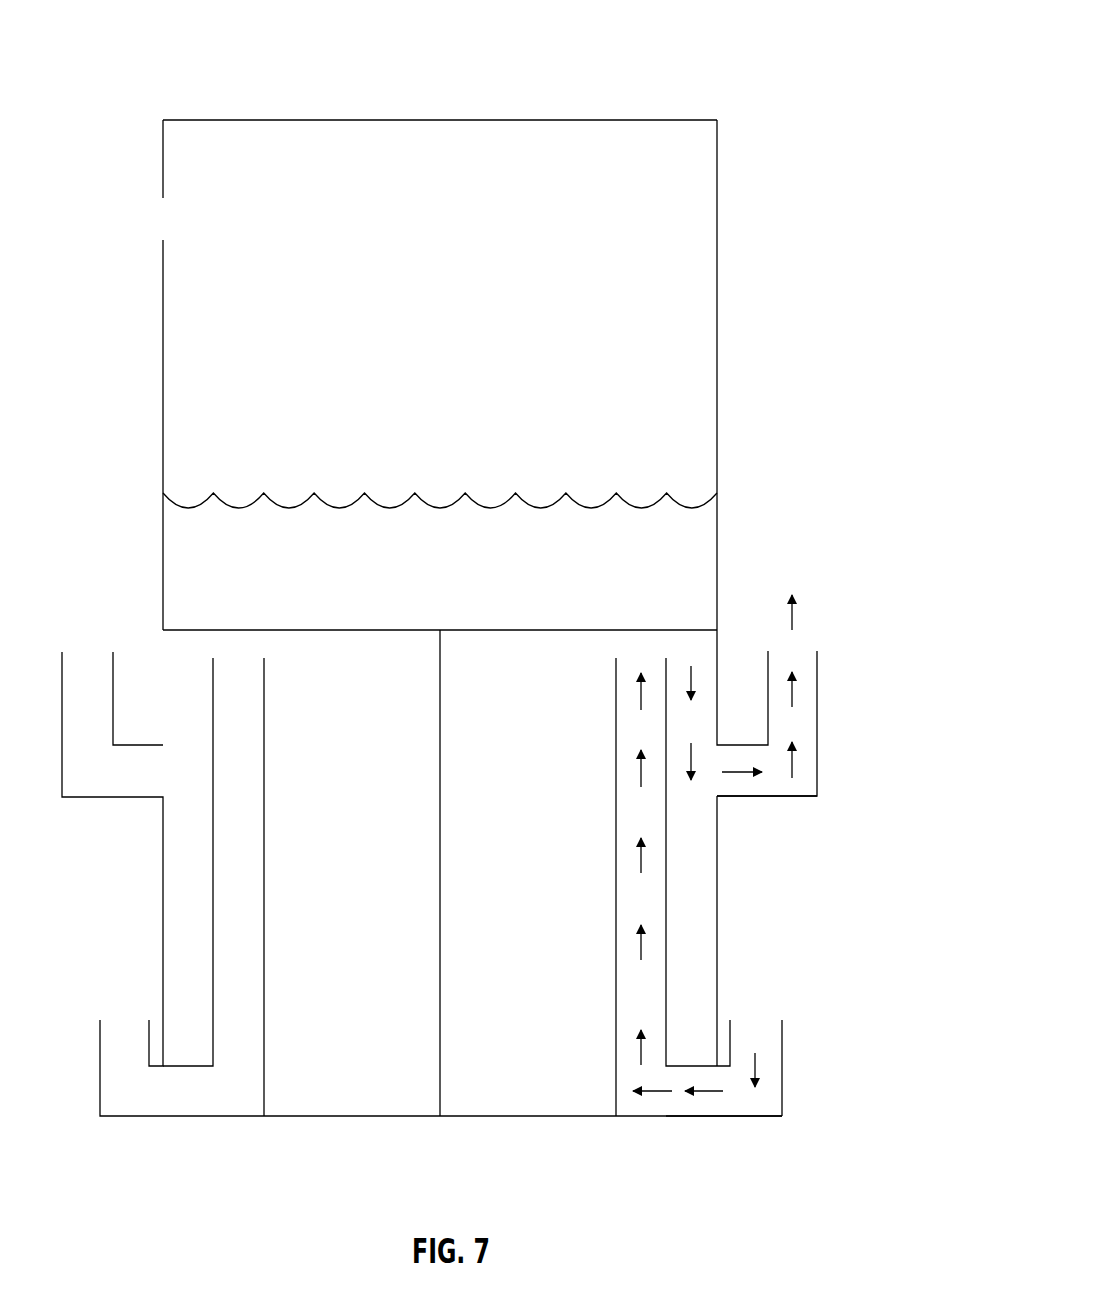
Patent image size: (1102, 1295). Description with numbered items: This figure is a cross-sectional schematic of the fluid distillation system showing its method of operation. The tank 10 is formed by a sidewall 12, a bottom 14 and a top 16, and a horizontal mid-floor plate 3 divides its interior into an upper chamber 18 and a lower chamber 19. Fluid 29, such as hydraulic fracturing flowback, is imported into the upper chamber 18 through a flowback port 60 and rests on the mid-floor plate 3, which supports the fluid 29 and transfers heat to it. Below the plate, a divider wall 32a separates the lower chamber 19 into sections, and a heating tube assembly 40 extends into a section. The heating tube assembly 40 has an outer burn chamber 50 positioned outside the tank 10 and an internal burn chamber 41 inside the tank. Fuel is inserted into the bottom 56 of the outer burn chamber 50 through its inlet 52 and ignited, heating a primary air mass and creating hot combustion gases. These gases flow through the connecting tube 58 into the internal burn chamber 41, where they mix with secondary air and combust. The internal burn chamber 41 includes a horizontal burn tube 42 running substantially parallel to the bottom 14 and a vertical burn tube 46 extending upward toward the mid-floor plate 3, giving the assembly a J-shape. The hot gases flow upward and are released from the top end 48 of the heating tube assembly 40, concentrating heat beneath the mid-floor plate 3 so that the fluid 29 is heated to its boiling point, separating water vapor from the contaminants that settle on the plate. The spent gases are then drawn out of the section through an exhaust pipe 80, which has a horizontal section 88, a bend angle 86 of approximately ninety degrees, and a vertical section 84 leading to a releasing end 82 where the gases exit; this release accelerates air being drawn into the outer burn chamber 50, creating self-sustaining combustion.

The tank 10 is at (705, 35).
The sidewall 12 is at (720, 405).
The top 16 is at (450, 119).
The upper chamber 18 is at (700, 248).
The flowback port 60 is at (165, 223).
The fluid 29 is at (210, 500).
The mid-floor plate 3 is at (560, 630).
The lower chamber 19 is at (182, 918).
The bottom 14 is at (300, 1118).
The divider wall 32a is at (438, 1088).
The heating tube assembly 40 is at (553, 921).
The top end 48 is at (613, 665).
The vertical burn tube 46 is at (622, 755).
The internal burn chamber 41 is at (624, 840).
The horizontal burn tube 42 is at (710, 1060).
The inlet 52 is at (760, 1020).
The outer burn chamber 50 is at (765, 1080).
The bottom 56 is at (722, 1118).
The connecting tube 58 is at (652, 1112).
The exhaust pipe 80 is at (818, 752).
The releasing end 82 is at (805, 655).
The vertical section 84 is at (805, 715).
The bend angle 86 is at (807, 790).
The horizontal section 88 is at (765, 797).